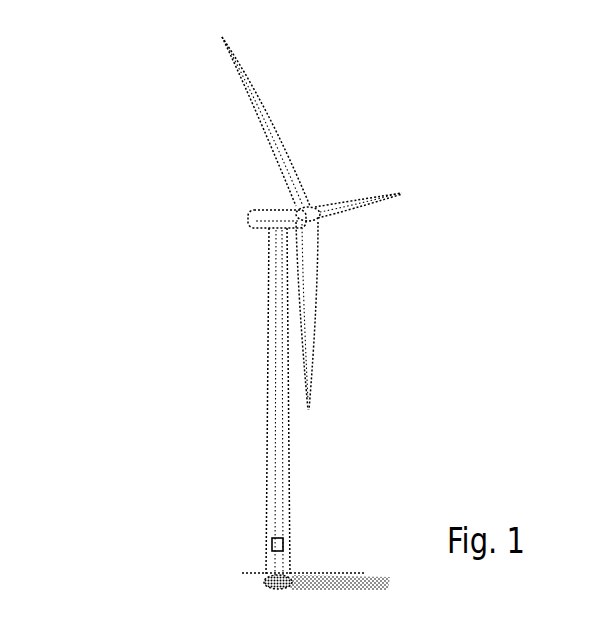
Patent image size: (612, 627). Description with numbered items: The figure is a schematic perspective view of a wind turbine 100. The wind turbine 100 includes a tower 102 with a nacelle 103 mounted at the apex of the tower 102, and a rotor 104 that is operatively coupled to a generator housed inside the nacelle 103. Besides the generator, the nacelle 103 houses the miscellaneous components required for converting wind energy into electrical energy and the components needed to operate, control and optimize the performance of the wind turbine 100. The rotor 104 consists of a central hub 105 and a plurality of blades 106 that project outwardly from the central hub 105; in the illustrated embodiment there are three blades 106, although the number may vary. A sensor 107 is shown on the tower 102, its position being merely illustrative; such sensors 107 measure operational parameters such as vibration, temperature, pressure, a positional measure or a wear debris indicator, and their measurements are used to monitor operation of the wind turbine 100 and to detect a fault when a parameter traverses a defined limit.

The wind turbine 100 is at (141, 178).
The tower 102 is at (273, 343).
The nacelle 103 is at (263, 212).
The rotor 104 is at (379, 281).
The central hub 105 is at (310, 210).
The blades 106 is at (268, 130).
The sensor 107 is at (272, 542).